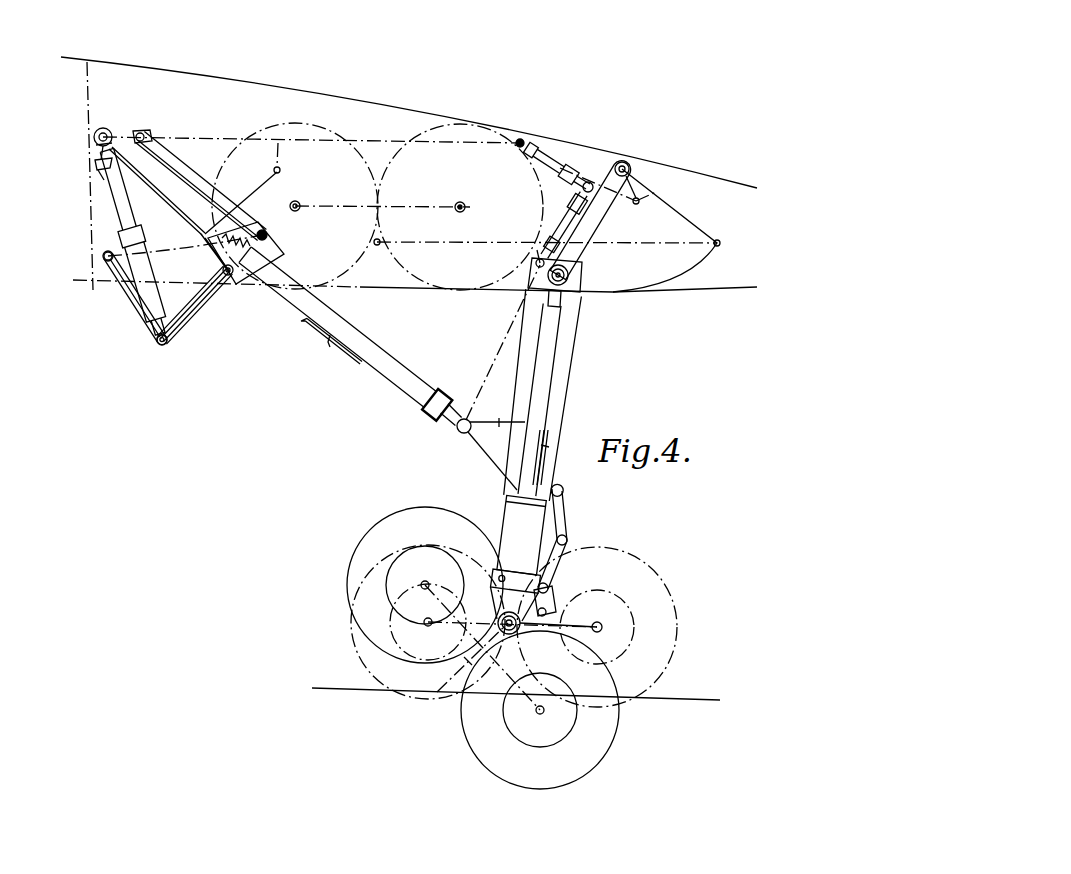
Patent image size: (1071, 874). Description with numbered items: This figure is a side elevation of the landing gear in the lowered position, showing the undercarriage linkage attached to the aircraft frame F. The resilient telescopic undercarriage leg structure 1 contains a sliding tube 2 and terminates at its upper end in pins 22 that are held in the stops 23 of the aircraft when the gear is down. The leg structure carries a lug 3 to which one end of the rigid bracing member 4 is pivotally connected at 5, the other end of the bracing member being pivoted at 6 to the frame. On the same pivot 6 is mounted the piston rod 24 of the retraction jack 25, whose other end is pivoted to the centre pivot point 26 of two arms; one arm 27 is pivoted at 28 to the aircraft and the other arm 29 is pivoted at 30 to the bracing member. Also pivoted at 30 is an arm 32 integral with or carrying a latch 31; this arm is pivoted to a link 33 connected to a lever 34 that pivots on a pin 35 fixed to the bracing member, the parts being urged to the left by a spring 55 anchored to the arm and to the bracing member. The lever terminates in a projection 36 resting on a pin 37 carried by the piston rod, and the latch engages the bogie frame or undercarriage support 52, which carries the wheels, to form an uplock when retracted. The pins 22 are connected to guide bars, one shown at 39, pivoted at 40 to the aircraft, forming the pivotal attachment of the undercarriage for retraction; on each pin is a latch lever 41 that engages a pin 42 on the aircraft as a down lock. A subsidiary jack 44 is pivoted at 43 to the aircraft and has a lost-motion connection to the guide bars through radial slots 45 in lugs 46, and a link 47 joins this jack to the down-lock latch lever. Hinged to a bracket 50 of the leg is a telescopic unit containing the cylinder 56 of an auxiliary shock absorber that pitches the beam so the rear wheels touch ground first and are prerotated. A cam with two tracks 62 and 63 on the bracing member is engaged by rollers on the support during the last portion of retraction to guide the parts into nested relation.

The aircraft frame F is at (203, 68).
The telescopic undercarriage leg structure 1 is at (565, 363).
The sliding tube 2 is at (506, 505).
The lug 3 is at (496, 443).
The rigid bracing member 4 is at (385, 353).
The pivot 5 is at (457, 429).
The pivot 6 is at (105, 128).
The pins 22 is at (572, 272).
The stops 23 is at (536, 290).
The piston rod 24 is at (117, 205).
The retraction jack 25 is at (140, 255).
The centre pivot point 26 is at (170, 340).
The arm 27 is at (132, 298).
The pivot 28 is at (105, 254).
The arm 29 is at (198, 305).
The pivot 30 is at (236, 277).
The latch 31 is at (210, 278).
The arm 32 is at (280, 258).
The link 33 is at (188, 172).
The lever 34 is at (142, 133).
The pin 35 is at (120, 172).
The projection 36 is at (103, 176).
The pin 37 is at (98, 164).
The guide bar 39 is at (597, 224).
The pivot 40 is at (630, 167).
The latch lever 41 is at (535, 256).
The pin 42 is at (536, 263).
The pivot 43 is at (522, 141).
The subsidiary jack 44 is at (549, 152).
The radial slots 45 is at (592, 180).
The lugs 46 is at (636, 197).
The link 47 is at (548, 212).
The bracket 50 is at (556, 596).
The bogie frame or undercarriage support 52 is at (446, 690).
The spring 55 is at (268, 236).
The auxiliary shock absorber cylinder 56 is at (548, 621).
The cam track 62 is at (298, 320).
The cam track 63 is at (328, 344).